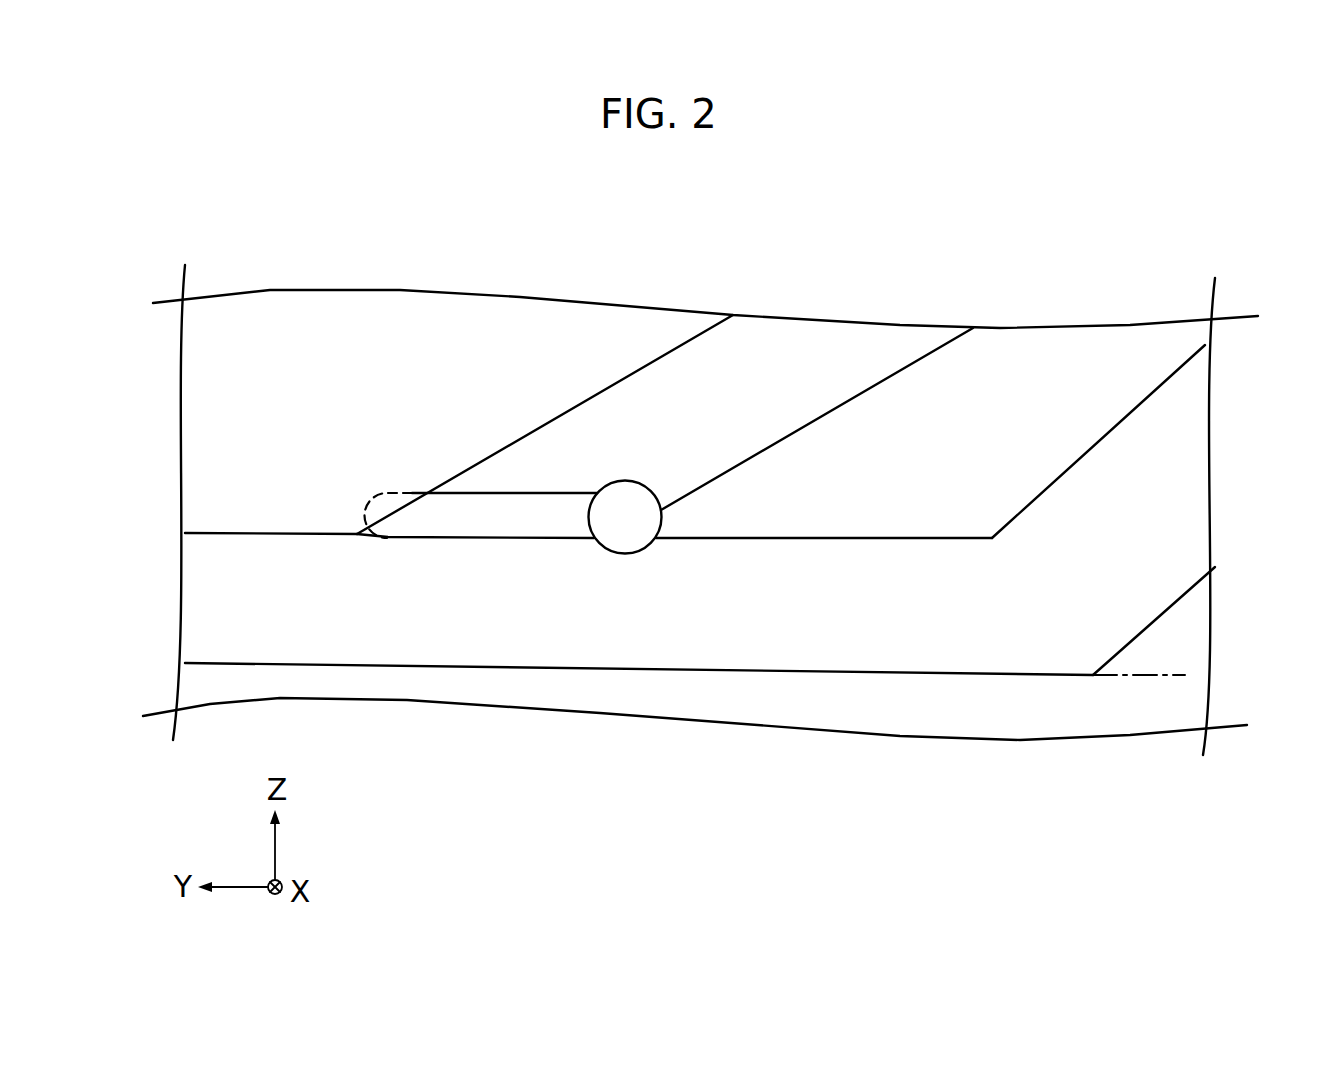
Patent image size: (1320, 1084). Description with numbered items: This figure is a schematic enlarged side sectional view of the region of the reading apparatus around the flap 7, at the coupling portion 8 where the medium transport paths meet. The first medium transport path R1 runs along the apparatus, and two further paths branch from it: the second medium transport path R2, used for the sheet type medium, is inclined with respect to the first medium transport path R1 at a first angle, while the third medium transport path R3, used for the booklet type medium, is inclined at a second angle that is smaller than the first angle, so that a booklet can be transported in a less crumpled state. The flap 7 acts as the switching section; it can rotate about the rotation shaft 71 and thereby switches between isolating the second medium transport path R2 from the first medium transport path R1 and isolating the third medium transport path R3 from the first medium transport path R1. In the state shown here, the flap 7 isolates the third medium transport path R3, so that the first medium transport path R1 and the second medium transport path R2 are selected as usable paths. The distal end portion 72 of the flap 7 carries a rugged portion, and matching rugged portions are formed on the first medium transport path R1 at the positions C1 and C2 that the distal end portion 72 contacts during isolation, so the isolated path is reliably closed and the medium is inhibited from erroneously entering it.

The coupling portion 8 is at (1102, 233).
The flap 7 is at (378, 245).
The rotation shaft 71 is at (625, 512).
The distal end portion 72 is at (381, 491).
The first medium transport path R1 is at (620, 665).
The second medium transport path R2 is at (1118, 425).
The third medium transport path R3 is at (602, 393).
The contact position C1 is at (452, 665).
The contact position C2 is at (372, 502).